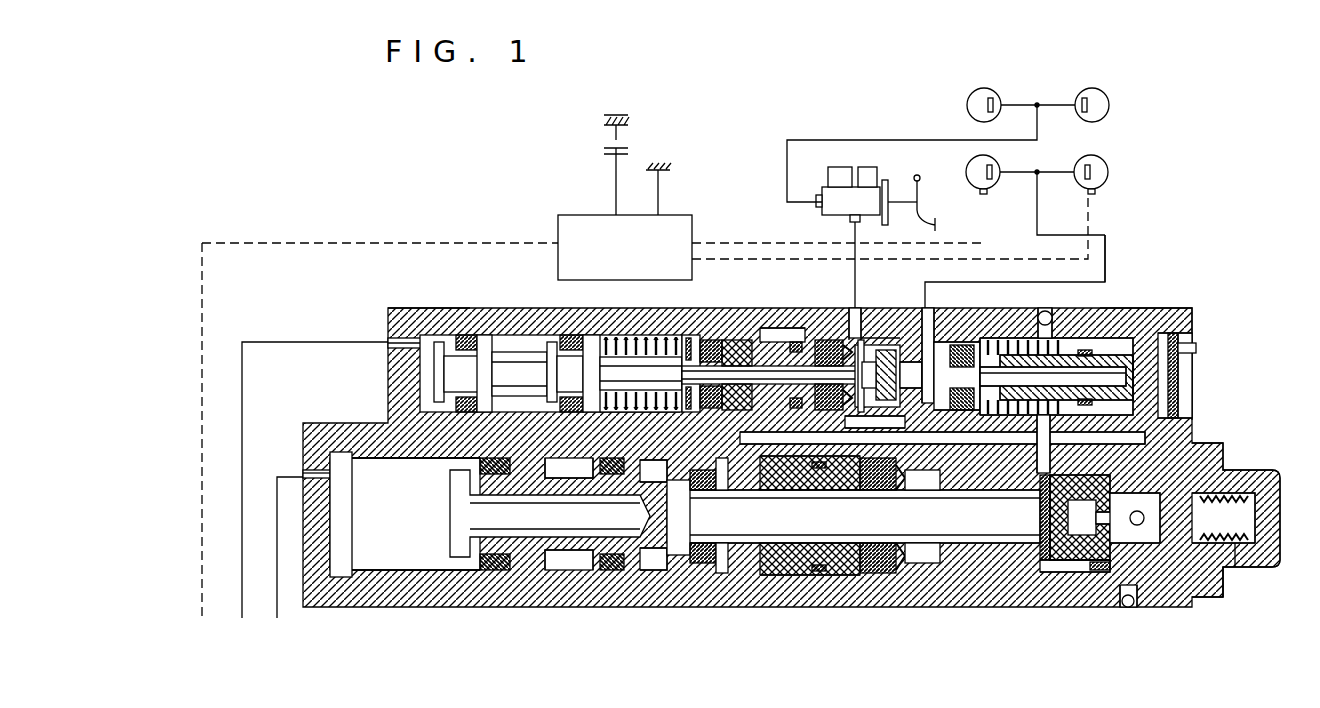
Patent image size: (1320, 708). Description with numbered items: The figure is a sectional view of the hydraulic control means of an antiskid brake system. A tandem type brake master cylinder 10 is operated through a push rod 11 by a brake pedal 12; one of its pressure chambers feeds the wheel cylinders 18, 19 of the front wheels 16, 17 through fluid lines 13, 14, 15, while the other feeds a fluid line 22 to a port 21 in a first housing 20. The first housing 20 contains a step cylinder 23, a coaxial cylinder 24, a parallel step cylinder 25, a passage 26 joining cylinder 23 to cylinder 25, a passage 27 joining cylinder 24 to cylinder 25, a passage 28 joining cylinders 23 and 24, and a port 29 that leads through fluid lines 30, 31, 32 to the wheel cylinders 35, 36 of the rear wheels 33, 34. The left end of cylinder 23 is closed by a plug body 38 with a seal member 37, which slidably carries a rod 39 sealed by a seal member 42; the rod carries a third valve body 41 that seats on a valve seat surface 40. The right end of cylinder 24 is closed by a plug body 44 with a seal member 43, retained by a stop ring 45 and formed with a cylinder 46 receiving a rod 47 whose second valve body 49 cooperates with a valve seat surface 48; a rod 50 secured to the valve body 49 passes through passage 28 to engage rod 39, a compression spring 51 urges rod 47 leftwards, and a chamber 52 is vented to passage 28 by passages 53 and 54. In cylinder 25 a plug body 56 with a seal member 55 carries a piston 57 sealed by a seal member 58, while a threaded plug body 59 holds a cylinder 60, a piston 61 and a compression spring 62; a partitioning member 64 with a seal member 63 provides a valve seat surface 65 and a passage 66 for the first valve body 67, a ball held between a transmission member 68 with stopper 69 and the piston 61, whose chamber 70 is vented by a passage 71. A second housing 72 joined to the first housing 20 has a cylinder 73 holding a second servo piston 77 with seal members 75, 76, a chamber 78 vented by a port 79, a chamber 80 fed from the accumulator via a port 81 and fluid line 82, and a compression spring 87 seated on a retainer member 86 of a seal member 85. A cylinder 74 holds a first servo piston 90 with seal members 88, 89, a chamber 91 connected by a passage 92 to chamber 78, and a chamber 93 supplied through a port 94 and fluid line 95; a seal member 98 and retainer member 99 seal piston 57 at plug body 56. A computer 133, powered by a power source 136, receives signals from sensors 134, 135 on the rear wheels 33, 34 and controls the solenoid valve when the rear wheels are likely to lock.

The tandem type brake master cylinder 10 is at (828, 198).
The push rod 11 is at (904, 198).
The brake pedal 12 is at (921, 200).
The fluid line 13 is at (888, 140).
The fluid line 14 is at (1028, 105).
The fluid line 15 is at (1058, 105).
The front wheel 16 is at (980, 90).
The front wheel 17 is at (1098, 92).
The wheel cylinder 18 is at (992, 98).
The wheel cylinder 19 is at (1082, 99).
The first housing 20 is at (1184, 322).
The port 21 is at (863, 313).
The fluid line 22 is at (855, 240).
The step cylinder 23 is at (802, 345).
The cylinder 24 is at (1130, 340).
The step cylinder 25 is at (990, 556).
The passage 26 is at (1142, 436).
The passage 27 is at (1050, 458).
The passage 28 is at (900, 398).
The port 29 is at (928, 320).
The fluid line 30 is at (1108, 258).
The fluid line 31 is at (1010, 175).
The fluid line 32 is at (1054, 175).
The rear wheel 33 is at (998, 168).
The rear wheel 34 is at (1106, 166).
The wheel cylinder 35 is at (992, 186).
The wheel cylinder 36 is at (1084, 168).
The seal member 37 is at (796, 355).
The plug body 38 is at (775, 340).
The rod 39 is at (756, 365).
The valve seat surface 40 is at (882, 348).
The third valve body 41 is at (880, 350).
The seal member 42 is at (822, 335).
The seal member 43 is at (1172, 334).
The plug body 44 is at (1180, 372).
The stop ring 45 is at (1186, 347).
The cylinder 46 is at (1100, 350).
The rod 47 is at (1068, 360).
The valve seat surface 48 is at (940, 348).
The second valve body 49 is at (1000, 352).
The rod 50 is at (962, 345).
The compression spring 51 is at (1044, 314).
The chamber 52 is at (1098, 355).
The passage 53 is at (1122, 380).
The passage 54 is at (902, 392).
The seal member 55 is at (822, 575).
The plug body 56 is at (786, 574).
The piston 57 is at (976, 543).
The seal member 58 is at (878, 572).
The plug body 59 is at (1230, 580).
The cylinder 60 is at (1222, 485).
The piston 61 is at (1255, 512).
The compression spring 62 is at (1258, 540).
The seal member 63 is at (1124, 607).
The partitioning member 64 is at (1093, 570).
The valve seat surface 65 is at (1122, 517).
The passage 66 is at (1078, 500).
The first valve body 67 is at (1144, 522).
The transmission member 68 is at (1044, 508).
The stopper 69 is at (1050, 562).
The chamber 70 is at (1240, 572).
The passage 71 is at (1163, 494).
The second housing 72 is at (414, 324).
The cylinder 73 is at (518, 350).
The cylinder 74 is at (570, 556).
The seal member 75 is at (470, 340).
The seal member 76 is at (590, 340).
The second servo piston 77 is at (551, 352).
The chamber 78 is at (706, 350).
The port 79 is at (690, 342).
The chamber 80 is at (424, 355).
The port 81 is at (390, 340).
The fluid line 82 is at (290, 342).
The seal member 85 is at (768, 350).
The retainer member 86 is at (686, 360).
The compression spring 87 is at (612, 345).
The seal member 88 is at (496, 572).
The seal member 89 is at (612, 575).
The first servo piston 90 is at (536, 575).
The chamber 91 is at (652, 578).
The passage 92 is at (678, 428).
The chamber 93 is at (390, 577).
The port 94 is at (305, 477).
The fluid line 95 is at (277, 586).
The seal member 98 is at (720, 560).
The retainer member 99 is at (702, 560).
The computer 133 is at (602, 216).
The sensor 134 is at (982, 193).
The sensor 135 is at (1094, 194).
The power source 136 is at (598, 148).